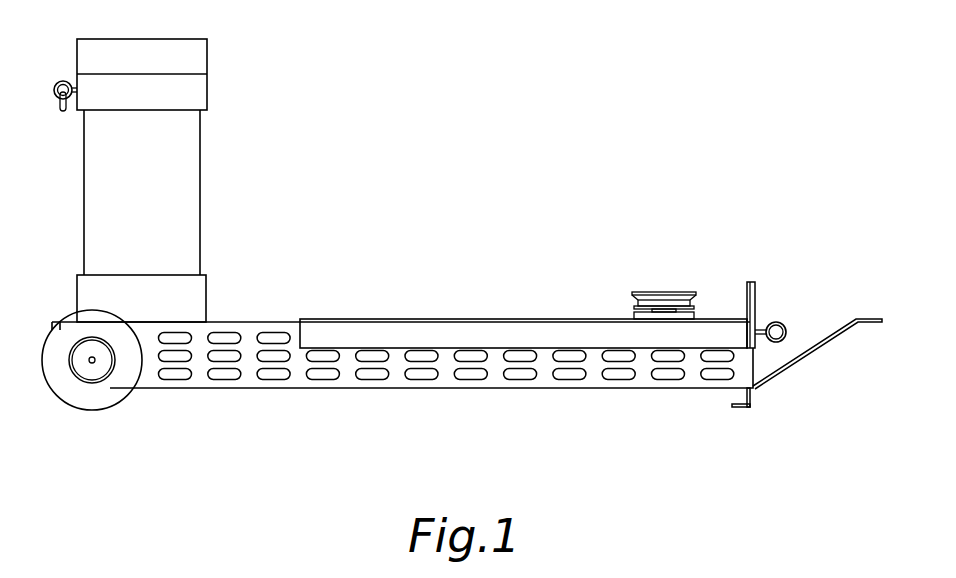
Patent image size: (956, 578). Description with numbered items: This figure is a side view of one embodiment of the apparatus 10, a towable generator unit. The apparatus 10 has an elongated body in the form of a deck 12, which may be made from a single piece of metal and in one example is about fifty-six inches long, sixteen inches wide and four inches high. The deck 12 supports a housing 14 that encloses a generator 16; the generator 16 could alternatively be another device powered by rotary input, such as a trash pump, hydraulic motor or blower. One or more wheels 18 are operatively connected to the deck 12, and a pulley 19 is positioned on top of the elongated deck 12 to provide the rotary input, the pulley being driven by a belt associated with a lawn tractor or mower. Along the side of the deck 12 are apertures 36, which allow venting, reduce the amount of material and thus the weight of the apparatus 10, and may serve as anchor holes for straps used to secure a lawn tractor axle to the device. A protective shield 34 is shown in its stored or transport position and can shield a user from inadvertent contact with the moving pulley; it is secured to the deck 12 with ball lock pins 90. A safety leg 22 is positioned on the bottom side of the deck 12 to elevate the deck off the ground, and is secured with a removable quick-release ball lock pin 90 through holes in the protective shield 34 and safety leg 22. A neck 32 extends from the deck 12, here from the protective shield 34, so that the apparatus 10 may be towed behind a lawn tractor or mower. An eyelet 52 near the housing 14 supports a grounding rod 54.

The apparatus 10 is at (512, 169).
The deck 12 is at (400, 389).
The housing 14 is at (207, 40).
The generator 16 is at (200, 153).
The wheel 18 is at (112, 400).
The pulley 19 is at (643, 291).
The safety leg 22 is at (758, 282).
The neck 32 is at (802, 355).
The protective shield 34 is at (537, 325).
The apertures 36 is at (232, 336).
The eyelet 52 is at (62, 80).
The grounding rod 54 is at (63, 112).
The ball lock pin 90 is at (783, 322).